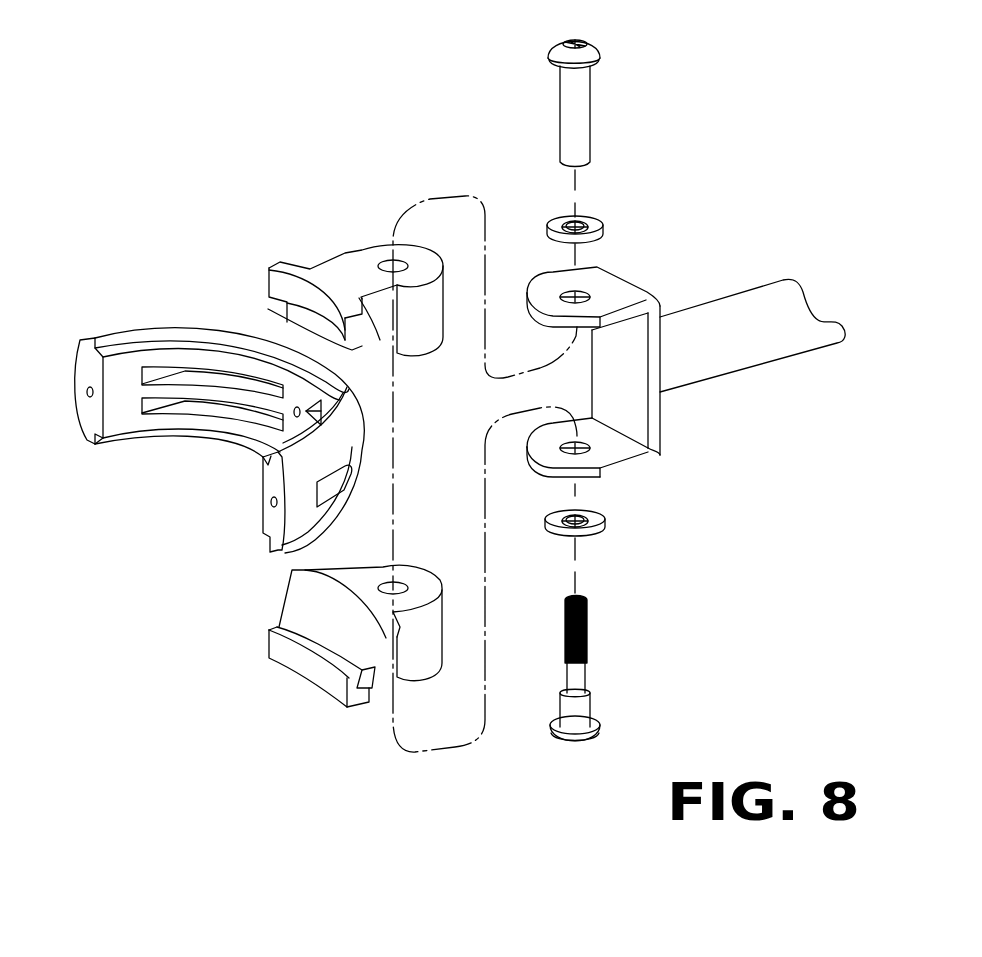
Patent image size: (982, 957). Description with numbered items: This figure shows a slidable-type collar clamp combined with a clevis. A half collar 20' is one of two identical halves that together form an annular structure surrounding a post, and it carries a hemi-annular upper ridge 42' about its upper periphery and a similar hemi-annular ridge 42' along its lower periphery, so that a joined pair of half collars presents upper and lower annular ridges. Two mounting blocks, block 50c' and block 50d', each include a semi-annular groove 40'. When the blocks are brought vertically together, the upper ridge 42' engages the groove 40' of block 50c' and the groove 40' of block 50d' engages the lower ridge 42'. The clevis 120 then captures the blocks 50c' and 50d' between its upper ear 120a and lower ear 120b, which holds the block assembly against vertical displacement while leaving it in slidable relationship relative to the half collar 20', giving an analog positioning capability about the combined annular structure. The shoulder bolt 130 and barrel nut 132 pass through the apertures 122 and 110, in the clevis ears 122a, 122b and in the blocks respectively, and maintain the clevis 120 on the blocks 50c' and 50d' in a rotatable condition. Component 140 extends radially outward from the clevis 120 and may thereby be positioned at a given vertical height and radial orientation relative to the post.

The half collar 20' is at (198, 440).
The hemi-annular ridge 42' is at (175, 393).
The semi-annular groove 40' is at (378, 480).
The mounting block 50c' is at (448, 345).
The mounting block 50d' is at (449, 595).
The aperture 110 is at (398, 284).
The barrel nut 132 is at (573, 120).
The aperture 122 is at (711, 288).
The upper ear 122a is at (612, 268).
The lower ear 122b is at (603, 463).
The clevis 120 is at (724, 332).
The upper ear 120a is at (620, 295).
The lower ear 120b is at (632, 458).
The component 140 is at (743, 342).
The shoulder bolt 130 is at (578, 718).